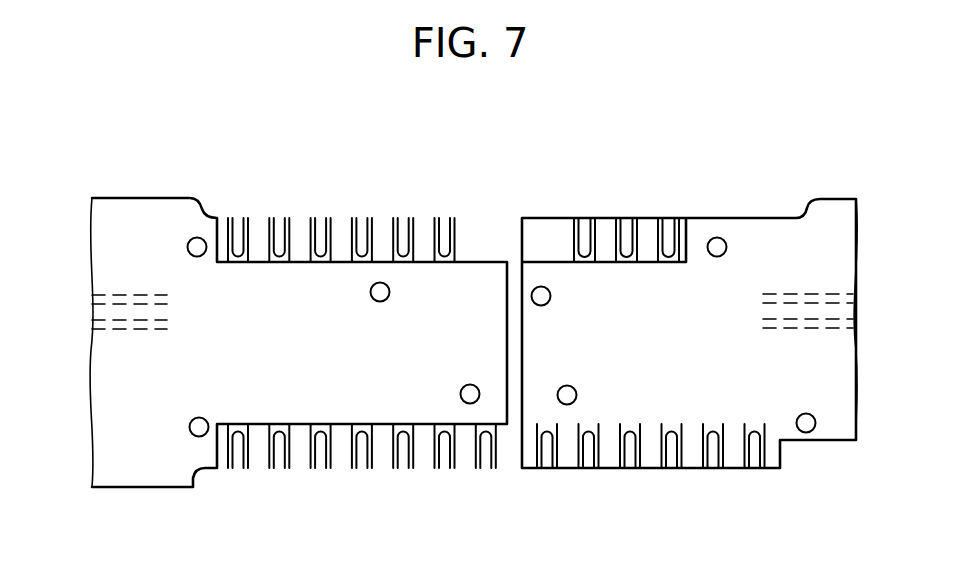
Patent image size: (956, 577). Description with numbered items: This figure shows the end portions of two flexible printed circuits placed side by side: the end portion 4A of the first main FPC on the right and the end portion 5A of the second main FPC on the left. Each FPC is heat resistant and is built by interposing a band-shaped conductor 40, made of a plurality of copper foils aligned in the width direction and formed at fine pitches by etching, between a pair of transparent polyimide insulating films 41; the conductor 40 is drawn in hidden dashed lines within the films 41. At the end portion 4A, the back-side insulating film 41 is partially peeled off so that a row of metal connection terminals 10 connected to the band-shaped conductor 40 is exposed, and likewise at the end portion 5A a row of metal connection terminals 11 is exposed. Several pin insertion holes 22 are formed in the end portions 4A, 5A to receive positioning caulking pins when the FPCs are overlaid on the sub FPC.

The end portion of the first main FPC 4A is at (652, 302).
The end portion of the second main FPC 5A is at (338, 302).
The connection terminals 10 is at (590, 220).
The connection terminals 11 is at (288, 218).
The pin insertion holes 22 is at (199, 427).
The band-shaped conductor 40 is at (133, 293).
The insulating films 41 is at (471, 313).